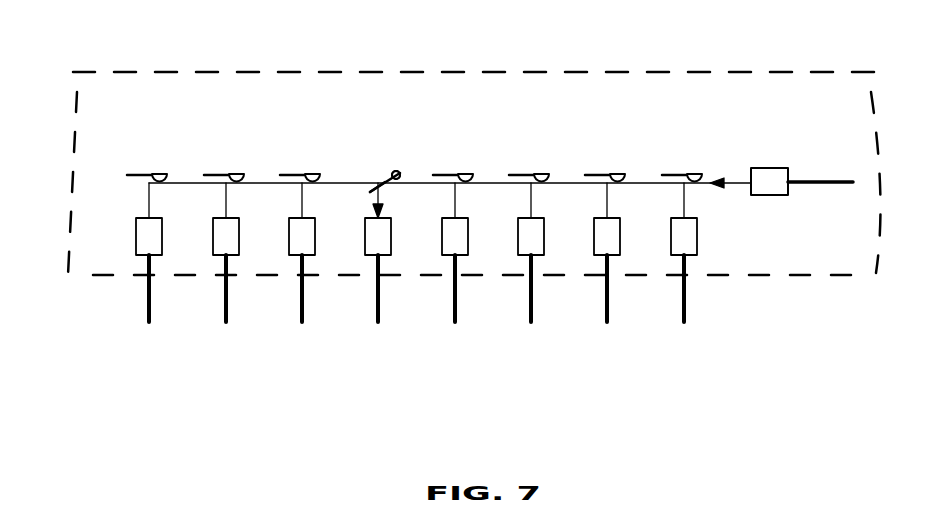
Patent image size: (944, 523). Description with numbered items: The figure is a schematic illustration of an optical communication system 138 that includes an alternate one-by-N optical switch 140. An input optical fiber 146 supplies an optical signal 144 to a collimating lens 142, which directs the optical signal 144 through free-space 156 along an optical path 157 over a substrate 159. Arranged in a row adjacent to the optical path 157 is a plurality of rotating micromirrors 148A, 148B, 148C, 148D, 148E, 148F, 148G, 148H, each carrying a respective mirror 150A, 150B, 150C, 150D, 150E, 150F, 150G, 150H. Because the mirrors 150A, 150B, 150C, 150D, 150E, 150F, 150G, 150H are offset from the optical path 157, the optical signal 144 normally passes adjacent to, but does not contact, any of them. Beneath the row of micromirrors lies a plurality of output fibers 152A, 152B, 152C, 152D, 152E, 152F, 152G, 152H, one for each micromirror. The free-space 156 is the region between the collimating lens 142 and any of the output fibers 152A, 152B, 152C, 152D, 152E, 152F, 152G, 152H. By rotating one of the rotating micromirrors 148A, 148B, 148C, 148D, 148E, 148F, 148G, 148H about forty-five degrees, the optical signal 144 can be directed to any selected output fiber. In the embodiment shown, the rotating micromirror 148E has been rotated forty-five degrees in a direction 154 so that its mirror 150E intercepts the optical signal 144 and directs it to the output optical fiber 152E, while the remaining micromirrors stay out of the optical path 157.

The optical communication system 138 is at (695, 55).
The 1×N optical switch 140 is at (275, 86).
The collimating lens 142 is at (770, 168).
The optical signal 144 is at (733, 185).
The optical fiber 146 is at (817, 182).
The rotating micromirror 148A is at (697, 172).
The rotating micromirror 148B is at (620, 172).
The rotating micromirror 148C is at (546, 172).
The rotating micromirror 148D is at (470, 172).
The rotating micromirror 148E is at (400, 170).
The rotating micromirror 148F is at (316, 172).
The rotating micromirror 148G is at (240, 172).
The rotating micromirror 148H is at (160, 172).
The mirror 150A is at (677, 172).
The mirror 150B is at (600, 172).
The mirror 150C is at (527, 172).
The mirror 150D is at (450, 172).
The mirror 150E is at (384, 178).
The mirror 150F is at (295, 172).
The mirror 150G is at (218, 172).
The mirror 150H is at (142, 172).
The output fiber 152A is at (684, 300).
The output fiber 152B is at (607, 300).
The output fiber 152C is at (531, 300).
The output fiber 152D is at (455, 300).
The output optical fiber 152E is at (378, 300).
The output fiber 152F is at (302, 300).
The output fiber 152G is at (226, 300).
The output fiber 152H is at (149, 303).
The direction 154 is at (340, 170).
The free-space 156 is at (722, 215).
The optical path 157 is at (133, 200).
The substrate 159 is at (845, 285).